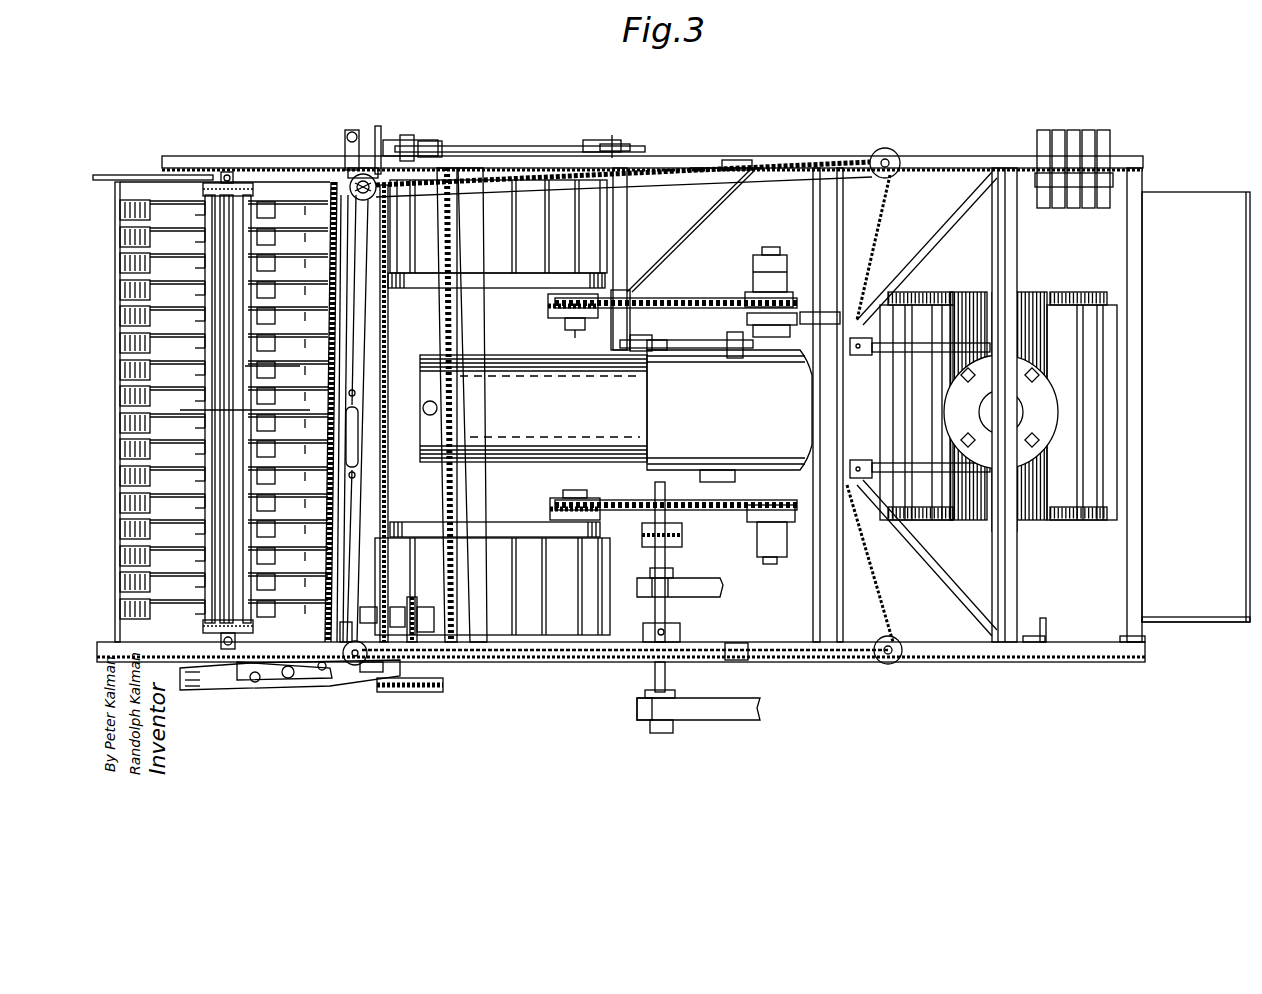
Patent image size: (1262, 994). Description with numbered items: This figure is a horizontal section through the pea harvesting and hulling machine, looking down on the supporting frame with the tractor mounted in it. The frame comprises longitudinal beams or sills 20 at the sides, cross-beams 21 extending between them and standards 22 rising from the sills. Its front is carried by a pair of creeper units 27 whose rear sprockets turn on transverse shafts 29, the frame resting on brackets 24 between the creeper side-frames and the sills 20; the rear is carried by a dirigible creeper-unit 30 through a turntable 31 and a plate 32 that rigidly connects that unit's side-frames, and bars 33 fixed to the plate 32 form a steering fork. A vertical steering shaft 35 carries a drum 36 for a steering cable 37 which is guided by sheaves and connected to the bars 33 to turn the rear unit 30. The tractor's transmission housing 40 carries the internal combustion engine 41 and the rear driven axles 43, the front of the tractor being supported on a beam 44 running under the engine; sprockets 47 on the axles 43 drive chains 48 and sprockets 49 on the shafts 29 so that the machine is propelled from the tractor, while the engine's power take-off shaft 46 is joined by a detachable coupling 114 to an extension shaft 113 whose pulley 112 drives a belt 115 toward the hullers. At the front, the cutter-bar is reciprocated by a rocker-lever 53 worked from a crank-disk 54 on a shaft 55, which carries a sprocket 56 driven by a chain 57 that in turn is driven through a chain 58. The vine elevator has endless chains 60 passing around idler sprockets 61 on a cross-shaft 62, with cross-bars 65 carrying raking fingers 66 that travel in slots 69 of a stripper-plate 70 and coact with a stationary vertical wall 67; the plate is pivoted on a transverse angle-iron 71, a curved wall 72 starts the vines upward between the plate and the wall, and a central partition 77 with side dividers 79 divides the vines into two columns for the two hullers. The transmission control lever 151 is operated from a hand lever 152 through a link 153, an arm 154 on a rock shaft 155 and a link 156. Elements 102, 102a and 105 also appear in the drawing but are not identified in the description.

The longitudinal beams or sills 20 is at (940, 166).
The cross-beams 21 is at (818, 605).
The standards 22 is at (760, 166).
The brackets 24 is at (525, 168).
The creeper or caterpillar units 27 is at (500, 265).
The transverse shaft for the rear sprockets 29 is at (583, 497).
The dirigible creeper-unit 30 is at (925, 442).
The turntable 31 is at (1040, 430).
The plate 32 is at (1025, 300).
The bars 33 is at (920, 335).
The vertical shaft 35 is at (352, 180).
The drum 36 is at (343, 185).
The steering cable 37 is at (360, 320).
The transmission housing 40 is at (729, 411).
The internal combustion engine 41 is at (533, 408).
The rear driven axles 43 is at (772, 247).
The beam 44 is at (790, 285).
The power take-off shaft 46 is at (668, 492).
The sprockets 47 is at (748, 292).
The chain 48 is at (710, 290).
The sprocket 49 is at (553, 314).
The rocker-lever 53 is at (312, 675).
The crank-disk 54 is at (352, 130).
The shaft 55 is at (405, 145).
The sprocket 56 is at (378, 128).
The chain 57 is at (380, 336).
The chain 58 is at (400, 678).
The endless chains 60 is at (203, 190).
The idler sprockets 61 is at (225, 174).
The cross-shaft 62 is at (228, 240).
The cross-bars 65 is at (190, 391).
The raking or carrying fingers 66 is at (268, 312).
The stationary vertical wall 67 is at (350, 500).
The slots 69 is at (268, 286).
The stripper-plate 70 is at (270, 446).
The transverse angle-iron 71 is at (440, 692).
The curved wall 72 is at (422, 692).
The central partition 77 is at (358, 415).
The dividers 79 is at (262, 176).
The box 102 is at (1198, 620).
The fins 102a is at (1057, 130).
The arm 105 is at (690, 597).
The pulley 112 is at (676, 694).
The extension shaft 113 is at (655, 680).
The detachable coupling 114 is at (645, 545).
The belt 115 is at (732, 712).
The controlling lever 151 is at (735, 332).
The hand lever 152 is at (435, 146).
The link 153 is at (585, 146).
The arm 154 is at (622, 150).
The rock shaft 155 is at (627, 220).
The link 156 is at (695, 348).